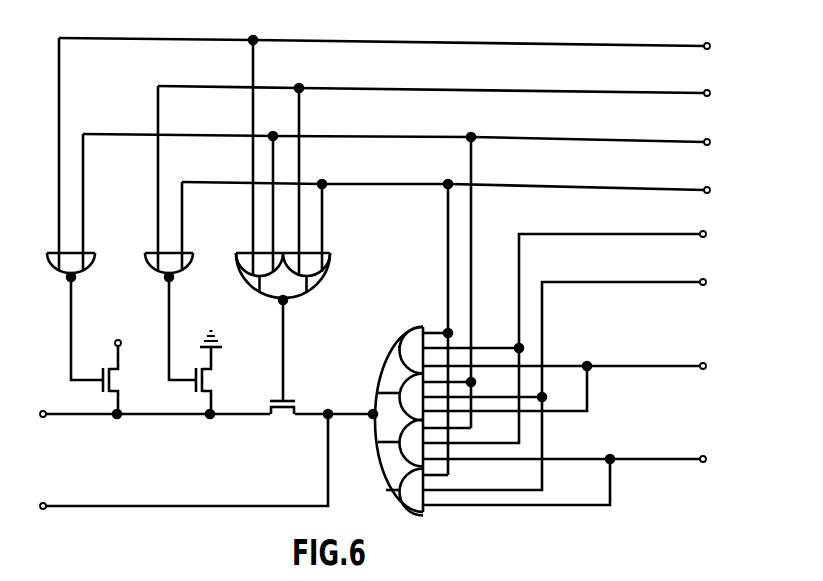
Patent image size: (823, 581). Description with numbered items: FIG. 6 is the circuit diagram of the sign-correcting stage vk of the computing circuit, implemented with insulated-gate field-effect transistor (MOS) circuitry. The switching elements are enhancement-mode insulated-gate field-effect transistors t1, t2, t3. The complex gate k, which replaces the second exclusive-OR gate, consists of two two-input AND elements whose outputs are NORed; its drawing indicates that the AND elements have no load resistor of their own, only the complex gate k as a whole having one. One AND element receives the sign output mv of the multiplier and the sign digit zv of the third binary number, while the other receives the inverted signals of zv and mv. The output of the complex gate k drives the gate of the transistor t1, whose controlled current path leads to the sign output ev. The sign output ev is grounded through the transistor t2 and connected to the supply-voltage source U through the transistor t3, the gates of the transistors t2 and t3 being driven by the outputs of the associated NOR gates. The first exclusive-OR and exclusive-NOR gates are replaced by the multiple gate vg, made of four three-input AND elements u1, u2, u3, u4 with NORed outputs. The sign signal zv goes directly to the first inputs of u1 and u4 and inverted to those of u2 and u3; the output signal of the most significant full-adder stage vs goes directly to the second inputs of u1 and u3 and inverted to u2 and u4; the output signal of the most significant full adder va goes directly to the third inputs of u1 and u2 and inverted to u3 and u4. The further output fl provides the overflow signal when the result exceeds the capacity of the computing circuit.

The sign output of the multiplier mv is at (747, 33).
The sign digit of the third binary number zv is at (747, 129).
The sign-correcting stage vk is at (415, 74).
The complex gate k is at (329, 282).
The transistor t1 is at (282, 420).
The transistor t2 is at (216, 372).
The transistor t3 is at (122, 380).
The supply-voltage source U is at (118, 330).
The sign output ev is at (205, 426).
The further output fl is at (181, 461).
The multiple gate vg is at (397, 408).
The first AND element u1 is at (412, 350).
The second AND element u2 is at (411, 397).
The third AND element u3 is at (412, 443).
The fourth AND element u4 is at (412, 492).
The output signal of the most significant full-adder stage vs is at (745, 269).
The output signal of the most significant full adder va is at (745, 446).